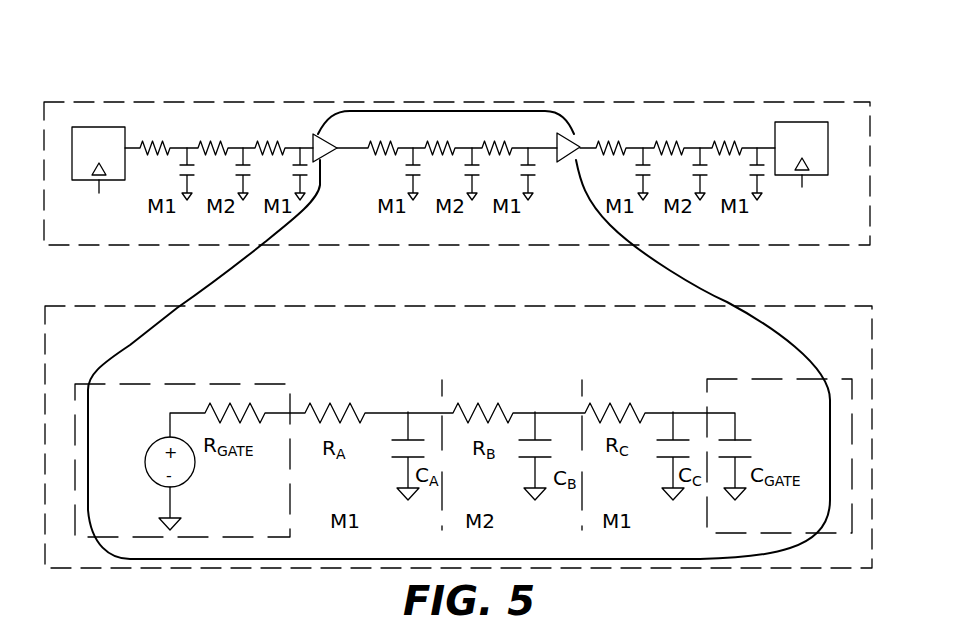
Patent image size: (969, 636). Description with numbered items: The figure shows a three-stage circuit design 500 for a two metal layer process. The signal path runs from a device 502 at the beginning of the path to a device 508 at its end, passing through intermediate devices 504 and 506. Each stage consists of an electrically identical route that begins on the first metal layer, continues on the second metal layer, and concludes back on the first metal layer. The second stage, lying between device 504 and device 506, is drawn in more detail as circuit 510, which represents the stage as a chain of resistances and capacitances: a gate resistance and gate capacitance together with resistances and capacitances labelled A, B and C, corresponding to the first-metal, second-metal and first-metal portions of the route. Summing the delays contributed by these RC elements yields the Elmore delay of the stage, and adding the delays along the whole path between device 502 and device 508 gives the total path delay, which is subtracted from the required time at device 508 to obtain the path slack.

The three-stage circuit design 500 is at (853, 216).
The device 502 is at (115, 127).
The device 504 is at (313, 136).
The device 506 is at (578, 145).
The device 508 is at (787, 122).
The circuit 510 is at (850, 344).